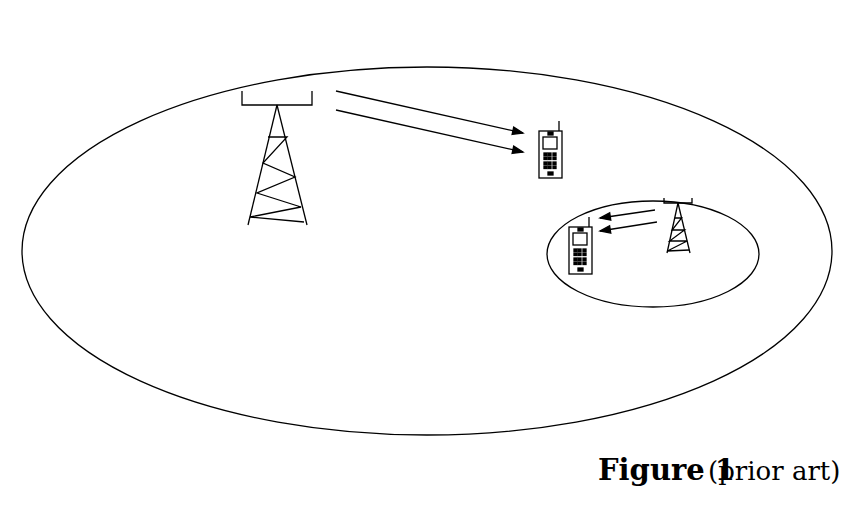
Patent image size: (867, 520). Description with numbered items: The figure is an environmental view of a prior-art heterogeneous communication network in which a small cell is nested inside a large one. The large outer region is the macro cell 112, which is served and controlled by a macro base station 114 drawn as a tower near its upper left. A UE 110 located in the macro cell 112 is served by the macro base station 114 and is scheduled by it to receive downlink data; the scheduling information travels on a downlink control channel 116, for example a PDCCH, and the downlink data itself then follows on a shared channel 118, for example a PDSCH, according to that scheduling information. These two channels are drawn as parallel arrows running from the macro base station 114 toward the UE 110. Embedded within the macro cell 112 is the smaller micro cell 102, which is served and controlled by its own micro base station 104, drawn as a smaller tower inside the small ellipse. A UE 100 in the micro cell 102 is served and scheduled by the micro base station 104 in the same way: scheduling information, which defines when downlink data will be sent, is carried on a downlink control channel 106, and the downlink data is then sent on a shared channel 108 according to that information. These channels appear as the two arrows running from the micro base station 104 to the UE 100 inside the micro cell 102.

The UE 100 is at (581, 285).
The micro cell 102 is at (653, 254).
The micro base station 104 is at (697, 221).
The downlink control channel 106 is at (621, 207).
The shared channel 108 is at (642, 220).
The UE 110 is at (541, 197).
The macro cell 112 is at (427, 251).
The macro base station 114 is at (286, 245).
The downlink control channel 116 is at (392, 92).
The shared channel 118 is at (435, 125).